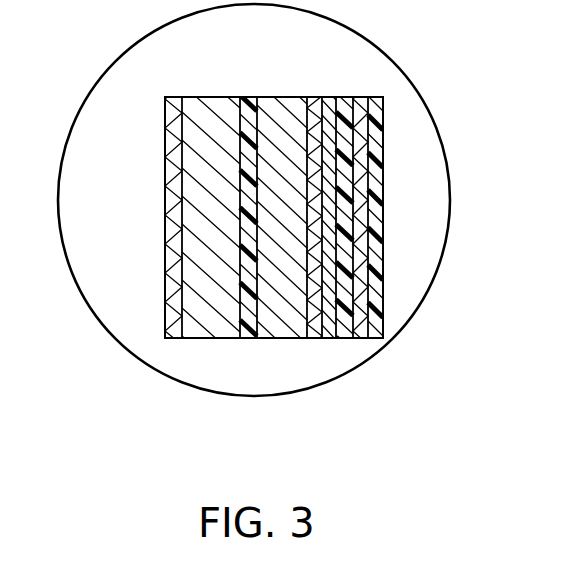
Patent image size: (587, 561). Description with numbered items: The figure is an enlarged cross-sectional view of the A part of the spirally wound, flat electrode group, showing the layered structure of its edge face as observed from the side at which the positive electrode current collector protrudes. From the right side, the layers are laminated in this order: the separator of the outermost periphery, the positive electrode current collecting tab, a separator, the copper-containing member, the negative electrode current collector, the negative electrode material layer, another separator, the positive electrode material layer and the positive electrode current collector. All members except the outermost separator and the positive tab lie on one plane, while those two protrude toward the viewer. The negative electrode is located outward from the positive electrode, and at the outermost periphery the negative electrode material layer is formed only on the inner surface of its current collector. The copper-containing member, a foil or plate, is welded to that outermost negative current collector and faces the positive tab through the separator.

The A part A is at (451, 200).